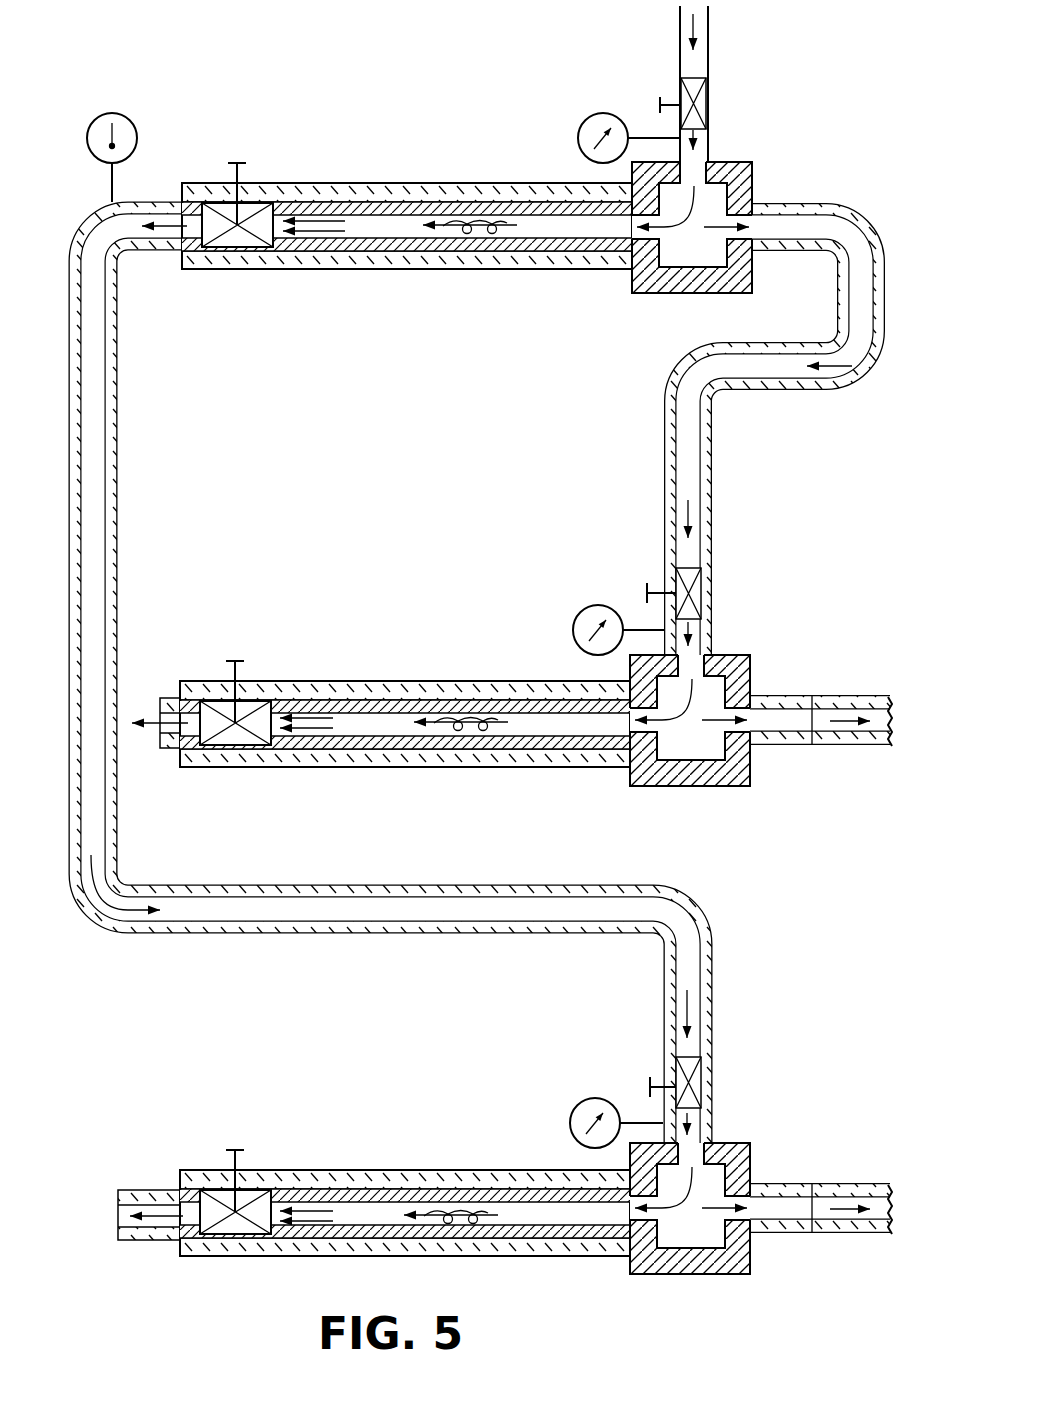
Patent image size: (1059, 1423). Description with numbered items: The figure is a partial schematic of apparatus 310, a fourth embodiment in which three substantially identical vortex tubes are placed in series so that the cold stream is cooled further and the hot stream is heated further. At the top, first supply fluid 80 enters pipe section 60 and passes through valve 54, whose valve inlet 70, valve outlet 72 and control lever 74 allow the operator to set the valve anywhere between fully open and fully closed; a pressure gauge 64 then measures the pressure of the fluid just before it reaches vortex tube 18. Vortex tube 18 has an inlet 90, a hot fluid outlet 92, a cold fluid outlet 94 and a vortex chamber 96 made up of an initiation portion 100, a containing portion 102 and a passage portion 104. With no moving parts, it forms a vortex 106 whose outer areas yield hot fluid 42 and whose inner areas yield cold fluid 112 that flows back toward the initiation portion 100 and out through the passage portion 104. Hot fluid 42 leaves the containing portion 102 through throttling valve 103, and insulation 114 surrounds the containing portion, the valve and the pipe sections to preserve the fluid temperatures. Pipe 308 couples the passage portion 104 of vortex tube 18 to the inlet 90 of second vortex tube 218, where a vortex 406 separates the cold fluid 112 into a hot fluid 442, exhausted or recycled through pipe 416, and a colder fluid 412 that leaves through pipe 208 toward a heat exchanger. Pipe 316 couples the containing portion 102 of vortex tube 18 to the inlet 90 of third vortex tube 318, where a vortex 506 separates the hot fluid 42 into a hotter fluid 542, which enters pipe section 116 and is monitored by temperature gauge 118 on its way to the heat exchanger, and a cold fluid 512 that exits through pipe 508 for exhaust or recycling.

The temperature gauge 118 is at (112, 113).
The hot fluid 42 is at (168, 226).
The valve 103 is at (215, 200).
The hot fluid outlet 92 is at (275, 215).
The vortex chamber 96 is at (368, 182).
The containing portion 102 is at (412, 200).
The insulation 114 is at (448, 193).
The vortex tube 18 is at (475, 199).
The vortex 106 is at (507, 224).
The pressure gauge 64 is at (585, 120).
The valve outlet 72 is at (680, 137).
The valve inlet 70 is at (680, 62).
The control lever 74 is at (660, 100).
The first supply fluid 80 is at (710, 30).
The valve 54 is at (710, 72).
The apparatus 310 is at (793, 67).
The pipe section 60 is at (722, 158).
The inlet 90 is at (737, 161).
The passage portion 104 is at (813, 203).
The cold fluid outlet 94 is at (850, 212).
The initiation portion 100 is at (632, 282).
The cold fluid 112 is at (715, 230).
The pipe 308 is at (857, 293).
The pipe 316 is at (78, 437).
The hot fluid 442 is at (318, 728).
The second vortex tube 218 is at (474, 697).
The vortex 406 is at (500, 720).
The pipe 416 is at (178, 698).
The colder fluid 412 is at (847, 735).
The pipe 208 is at (878, 745).
The hotter fluid 542 is at (315, 1213).
The third vortex tube 318 is at (478, 1190).
The vortex 506 is at (510, 1210).
The pipe section 116 is at (143, 1240).
The cold fluid 512 is at (848, 1207).
The pipe 508 is at (845, 1233).